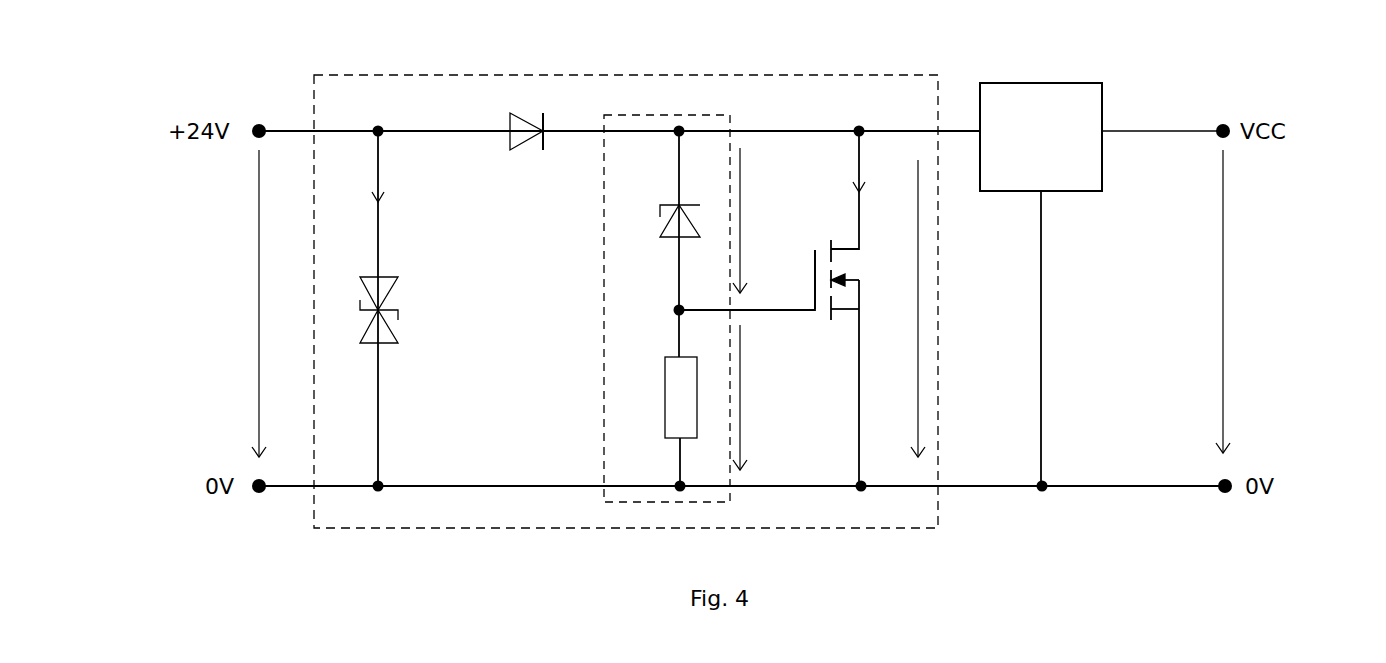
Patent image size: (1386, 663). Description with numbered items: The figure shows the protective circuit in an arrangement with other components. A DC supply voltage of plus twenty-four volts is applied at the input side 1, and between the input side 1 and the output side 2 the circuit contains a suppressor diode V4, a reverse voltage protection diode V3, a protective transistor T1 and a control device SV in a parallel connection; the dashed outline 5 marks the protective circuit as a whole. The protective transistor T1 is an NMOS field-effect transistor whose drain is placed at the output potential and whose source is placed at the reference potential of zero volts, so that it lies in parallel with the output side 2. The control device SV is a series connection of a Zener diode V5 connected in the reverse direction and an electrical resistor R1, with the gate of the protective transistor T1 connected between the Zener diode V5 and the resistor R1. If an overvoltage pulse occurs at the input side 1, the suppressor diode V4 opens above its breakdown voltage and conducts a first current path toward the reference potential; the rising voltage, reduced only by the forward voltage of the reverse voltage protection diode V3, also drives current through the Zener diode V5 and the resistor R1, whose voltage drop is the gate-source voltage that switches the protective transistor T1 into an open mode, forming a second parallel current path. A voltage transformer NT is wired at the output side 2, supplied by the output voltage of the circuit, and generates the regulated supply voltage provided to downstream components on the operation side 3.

The input side 1 is at (189, 264).
The output side 2 is at (1028, 284).
The operation side 3 is at (1308, 298).
The protection circuit 5 is at (652, 73).
The reverse voltage protection diode V3 is at (525, 117).
The suppressor diode V4 is at (364, 308).
The Zener diode V5 is at (662, 220).
The electrical resistor R1 is at (658, 398).
The protective transistor T1 is at (829, 308).
The voltage transformer NT is at (1041, 137).
The control device SV is at (730, 122).